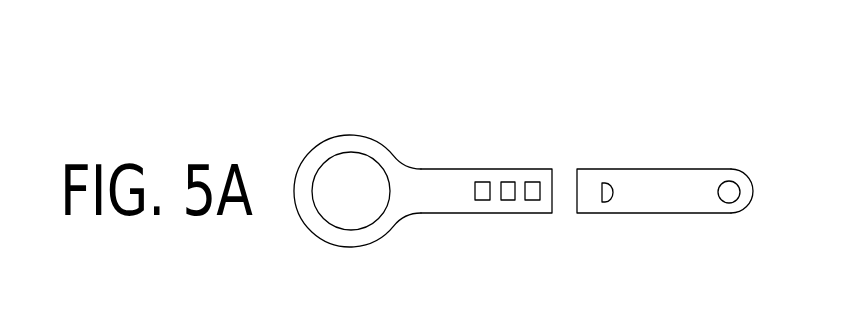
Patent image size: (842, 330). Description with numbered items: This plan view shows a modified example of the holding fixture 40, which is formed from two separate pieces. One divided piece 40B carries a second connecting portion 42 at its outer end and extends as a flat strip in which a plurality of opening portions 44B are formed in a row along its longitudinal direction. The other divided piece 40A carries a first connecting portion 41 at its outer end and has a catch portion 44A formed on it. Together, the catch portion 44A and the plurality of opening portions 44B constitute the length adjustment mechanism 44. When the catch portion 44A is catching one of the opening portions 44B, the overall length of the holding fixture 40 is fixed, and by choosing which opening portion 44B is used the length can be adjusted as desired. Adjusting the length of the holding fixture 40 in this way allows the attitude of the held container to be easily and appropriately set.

The holding fixture 40 is at (428, 170).
The divided piece 40A is at (669, 180).
The divided piece 40B is at (459, 178).
The first connecting portion 41 is at (748, 179).
The second connecting portion 42 is at (331, 141).
The length adjustment mechanism 44 is at (640, 284).
The catch portion 44A is at (605, 201).
The opening portions 44B is at (532, 199).